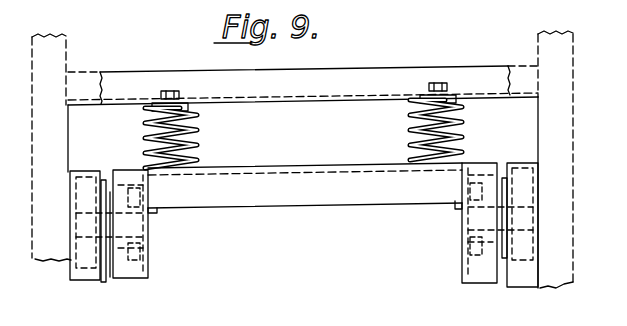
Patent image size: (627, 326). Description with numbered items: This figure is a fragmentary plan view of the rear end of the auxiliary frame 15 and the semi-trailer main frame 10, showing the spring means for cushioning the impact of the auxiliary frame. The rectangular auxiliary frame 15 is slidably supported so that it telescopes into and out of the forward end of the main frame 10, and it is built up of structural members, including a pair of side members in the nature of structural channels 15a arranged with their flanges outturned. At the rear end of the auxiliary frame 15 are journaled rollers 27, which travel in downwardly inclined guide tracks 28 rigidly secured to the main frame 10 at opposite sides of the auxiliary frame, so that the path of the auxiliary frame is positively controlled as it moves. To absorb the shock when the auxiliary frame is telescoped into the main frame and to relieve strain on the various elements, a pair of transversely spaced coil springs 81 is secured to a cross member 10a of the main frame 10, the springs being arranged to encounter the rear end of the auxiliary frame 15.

The main frame 10 is at (555, 117).
The cross member 10a is at (352, 82).
The coil springs 81 is at (197, 133).
The auxiliary frame 15 is at (334, 190).
The structural channels 15a is at (133, 272).
The rollers 27 is at (107, 266).
The guide tracks 28 is at (90, 273).